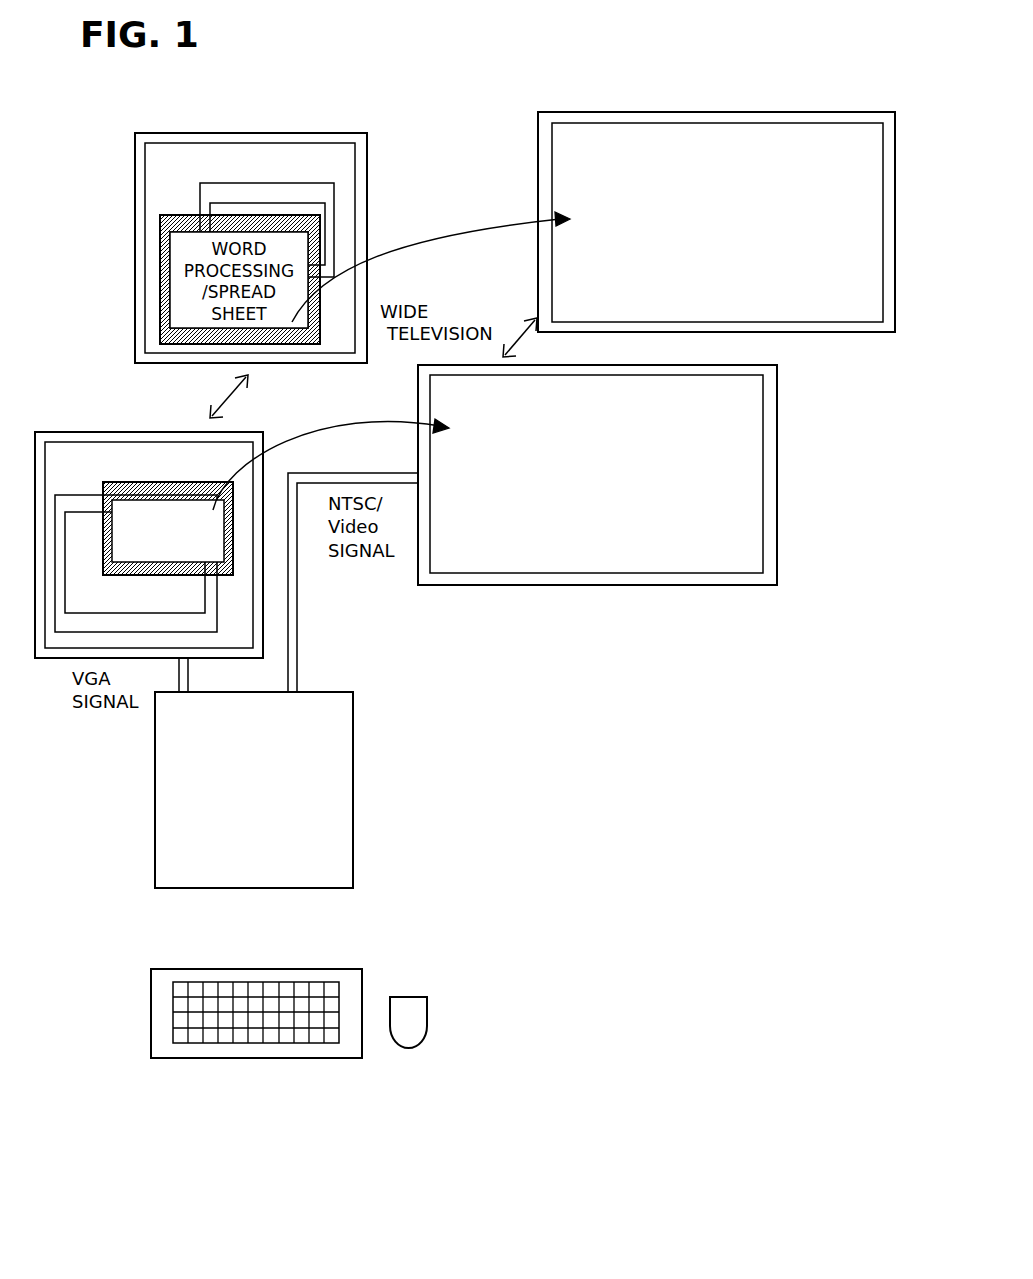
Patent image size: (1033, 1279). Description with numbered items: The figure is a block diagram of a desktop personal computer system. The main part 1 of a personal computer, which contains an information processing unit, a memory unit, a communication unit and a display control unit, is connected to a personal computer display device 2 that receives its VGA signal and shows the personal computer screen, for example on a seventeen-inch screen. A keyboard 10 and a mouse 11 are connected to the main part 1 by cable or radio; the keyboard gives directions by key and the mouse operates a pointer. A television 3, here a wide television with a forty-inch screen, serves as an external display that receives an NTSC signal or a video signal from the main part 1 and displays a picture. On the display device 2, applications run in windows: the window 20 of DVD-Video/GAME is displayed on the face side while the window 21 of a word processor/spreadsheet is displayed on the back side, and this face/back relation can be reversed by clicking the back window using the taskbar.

The main part of a personal computer 1 is at (353, 847).
The personal computer display device 2 is at (95, 432).
The television 3 is at (818, 340).
The keyboard 10 is at (233, 1060).
The mouse 11 is at (407, 1057).
The window of DVD-Video/GAME 20 is at (238, 188).
The window of a word processor/spreadsheet 21 is at (175, 279).